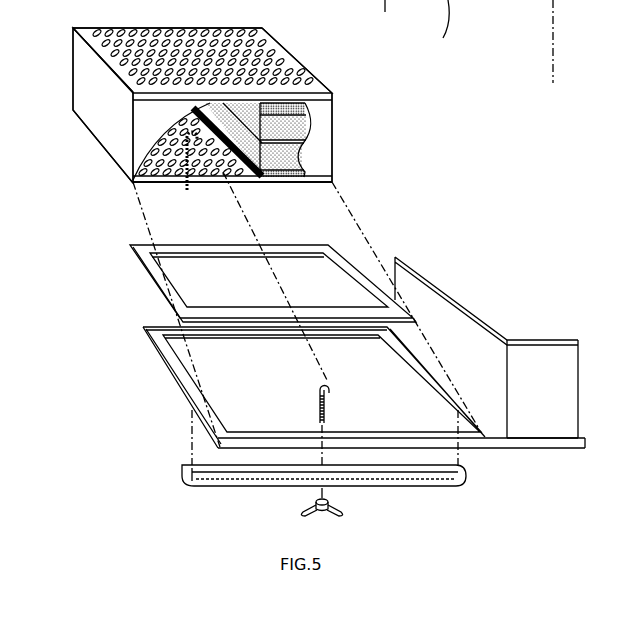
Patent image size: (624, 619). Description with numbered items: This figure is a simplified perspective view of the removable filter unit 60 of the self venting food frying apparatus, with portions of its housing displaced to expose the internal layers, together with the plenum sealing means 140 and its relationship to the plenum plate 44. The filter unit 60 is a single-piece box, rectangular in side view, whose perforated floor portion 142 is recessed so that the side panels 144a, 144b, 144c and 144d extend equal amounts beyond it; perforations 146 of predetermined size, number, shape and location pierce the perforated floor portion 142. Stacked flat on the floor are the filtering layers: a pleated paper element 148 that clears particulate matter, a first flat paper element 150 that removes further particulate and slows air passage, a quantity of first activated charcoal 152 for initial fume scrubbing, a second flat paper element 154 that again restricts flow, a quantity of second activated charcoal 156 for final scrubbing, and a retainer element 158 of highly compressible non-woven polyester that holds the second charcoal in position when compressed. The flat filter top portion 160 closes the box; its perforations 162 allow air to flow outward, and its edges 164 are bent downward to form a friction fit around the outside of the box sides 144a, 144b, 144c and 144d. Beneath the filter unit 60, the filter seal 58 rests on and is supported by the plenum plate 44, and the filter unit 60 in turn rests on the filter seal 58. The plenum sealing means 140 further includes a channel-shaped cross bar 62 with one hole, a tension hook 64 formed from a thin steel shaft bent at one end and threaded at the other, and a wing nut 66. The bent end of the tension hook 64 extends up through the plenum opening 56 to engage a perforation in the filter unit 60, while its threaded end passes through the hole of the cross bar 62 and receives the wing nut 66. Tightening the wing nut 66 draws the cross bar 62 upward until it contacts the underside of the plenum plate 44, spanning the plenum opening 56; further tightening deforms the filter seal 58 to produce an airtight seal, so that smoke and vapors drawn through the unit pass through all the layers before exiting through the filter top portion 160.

The plenum plate 44 is at (361, 387).
The plenum opening 56 is at (480, 347).
The filter seal 58 is at (247, 276).
The filter unit 60 is at (202, 105).
The cross bar 62 is at (324, 490).
The tension hook 64 is at (337, 405).
The wing nut 66 is at (333, 502).
The plenum sealing means 140 is at (397, 98).
The perforated floor portion 142 is at (153, 178).
The side panel 144a is at (75, 65).
The side panel 144b is at (102, 28).
The side panel 144c is at (291, 55).
The side panel 144d is at (138, 147).
The perforations 146 is at (289, 144).
The pleated paper element 148 is at (330, 181).
The first flat paper element 150 is at (300, 175).
The first activated charcoal 152 is at (302, 163).
The second flat paper element 154 is at (303, 142).
The second activated charcoal 156 is at (295, 130).
The retainer element 158 is at (297, 109).
The filter top portion 160 is at (173, 30).
The perforations 162 is at (215, 33).
The edges 164 is at (142, 27).